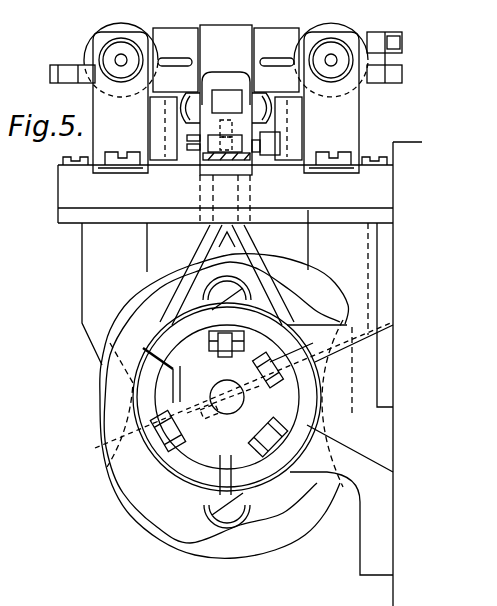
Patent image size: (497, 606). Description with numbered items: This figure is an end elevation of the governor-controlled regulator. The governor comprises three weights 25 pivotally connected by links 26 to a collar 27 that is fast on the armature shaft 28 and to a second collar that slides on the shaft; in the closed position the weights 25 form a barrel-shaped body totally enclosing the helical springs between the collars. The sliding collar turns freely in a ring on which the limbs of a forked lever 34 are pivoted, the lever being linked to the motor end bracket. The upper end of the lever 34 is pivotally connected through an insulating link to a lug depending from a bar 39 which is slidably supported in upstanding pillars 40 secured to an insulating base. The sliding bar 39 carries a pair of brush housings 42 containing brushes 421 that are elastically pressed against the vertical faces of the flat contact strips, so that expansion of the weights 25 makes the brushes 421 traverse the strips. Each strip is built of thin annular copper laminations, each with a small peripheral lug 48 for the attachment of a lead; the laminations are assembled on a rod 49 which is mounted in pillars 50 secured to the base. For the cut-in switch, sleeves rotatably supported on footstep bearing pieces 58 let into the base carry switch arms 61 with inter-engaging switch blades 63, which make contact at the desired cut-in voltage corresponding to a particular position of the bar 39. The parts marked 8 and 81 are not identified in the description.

The frame 8 is at (93, 282).
The weights 25 is at (157, 326).
The links 26 is at (225, 333).
The collar 27 is at (227, 397).
The armature shaft 28 is at (225, 413).
The forked lever 34 is at (253, 242).
The bar 39 is at (232, 92).
The pillar 40 is at (212, 82).
The brush housings 42 is at (226, 61).
The brushes 421 is at (303, 84).
The peripheral lug 48 is at (53, 66).
The rod 49 is at (120, 65).
The pillars 50 is at (103, 143).
The footstep bearing pieces 58 is at (157, 168).
The switch arms 61 is at (183, 147).
The switch blades 63 is at (197, 152).
The brake band 81 is at (145, 517).